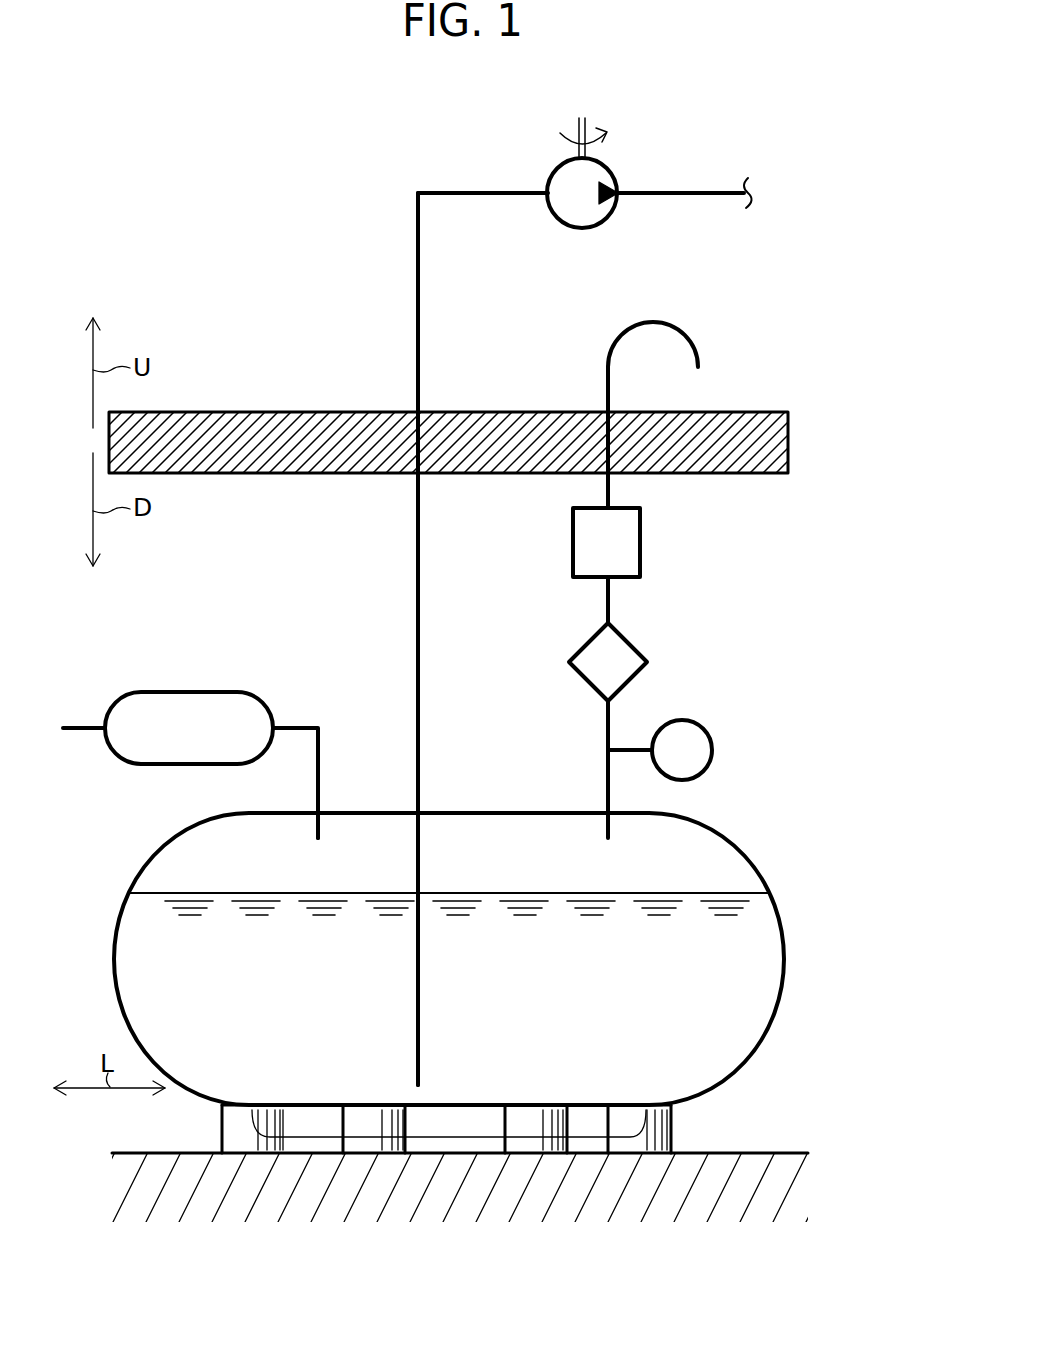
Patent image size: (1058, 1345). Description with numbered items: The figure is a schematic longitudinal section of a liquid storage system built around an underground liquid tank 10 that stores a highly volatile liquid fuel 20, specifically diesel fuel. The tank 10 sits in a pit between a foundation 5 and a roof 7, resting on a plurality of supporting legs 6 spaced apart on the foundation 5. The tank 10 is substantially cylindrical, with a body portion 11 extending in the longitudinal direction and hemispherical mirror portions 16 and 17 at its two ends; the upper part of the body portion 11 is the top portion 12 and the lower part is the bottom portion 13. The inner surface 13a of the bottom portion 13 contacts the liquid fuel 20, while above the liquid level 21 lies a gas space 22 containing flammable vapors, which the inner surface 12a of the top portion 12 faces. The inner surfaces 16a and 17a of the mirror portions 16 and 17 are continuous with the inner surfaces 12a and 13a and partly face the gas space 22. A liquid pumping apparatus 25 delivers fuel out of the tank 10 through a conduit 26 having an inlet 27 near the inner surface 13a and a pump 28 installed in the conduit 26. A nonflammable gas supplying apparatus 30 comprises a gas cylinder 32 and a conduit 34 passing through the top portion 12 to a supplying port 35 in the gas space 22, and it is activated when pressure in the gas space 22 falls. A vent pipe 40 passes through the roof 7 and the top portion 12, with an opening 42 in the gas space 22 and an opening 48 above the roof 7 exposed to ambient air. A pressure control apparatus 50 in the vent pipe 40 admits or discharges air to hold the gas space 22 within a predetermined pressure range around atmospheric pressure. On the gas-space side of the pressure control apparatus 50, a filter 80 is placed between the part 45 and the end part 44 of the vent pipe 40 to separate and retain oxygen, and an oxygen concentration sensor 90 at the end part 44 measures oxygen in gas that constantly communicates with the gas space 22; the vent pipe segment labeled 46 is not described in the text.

The foundation 5 is at (158, 1162).
The supporting legs 6 is at (656, 1128).
The roof 7 is at (343, 411).
The liquid tank 10 is at (454, 790).
The body portion 11 is at (466, 1120).
The top portion 12 is at (449, 933).
The inner surface of top portion 12a is at (394, 818).
The bottom portion 13 is at (446, 1102).
The inner surface of bottom portion 13a is at (472, 1102).
The mirror portion 16 is at (773, 1011).
The inner surface of mirror portion 16a is at (744, 864).
The mirror portion 17 is at (449, 959).
The inner surface of mirror portion 17a is at (158, 856).
The liquid fuel 20 is at (449, 924).
The level 21 is at (448, 893).
The gas space 22 is at (449, 939).
The liquid pumping apparatus 25 is at (557, 600).
The conduit 26 is at (390, 645).
The inlet 27 is at (416, 1084).
The pump 28 is at (581, 220).
The nonflammable gas supplying apparatus 30 is at (218, 735).
The gas cylinder 32 is at (181, 704).
The conduit 34 is at (319, 792).
The supplying port 35 is at (320, 839).
The vent pipe 40 is at (659, 554).
The opening 42 is at (606, 839).
The end part of vent pipe 44 is at (606, 747).
The part of vent pipe 45 is at (606, 602).
The vent pipe upper portion 46 is at (606, 492).
The opening 48 is at (699, 367).
The pressure control apparatus 50 is at (639, 542).
The filter 80 is at (632, 664).
The oxygen concentration sensor 90 is at (713, 752).